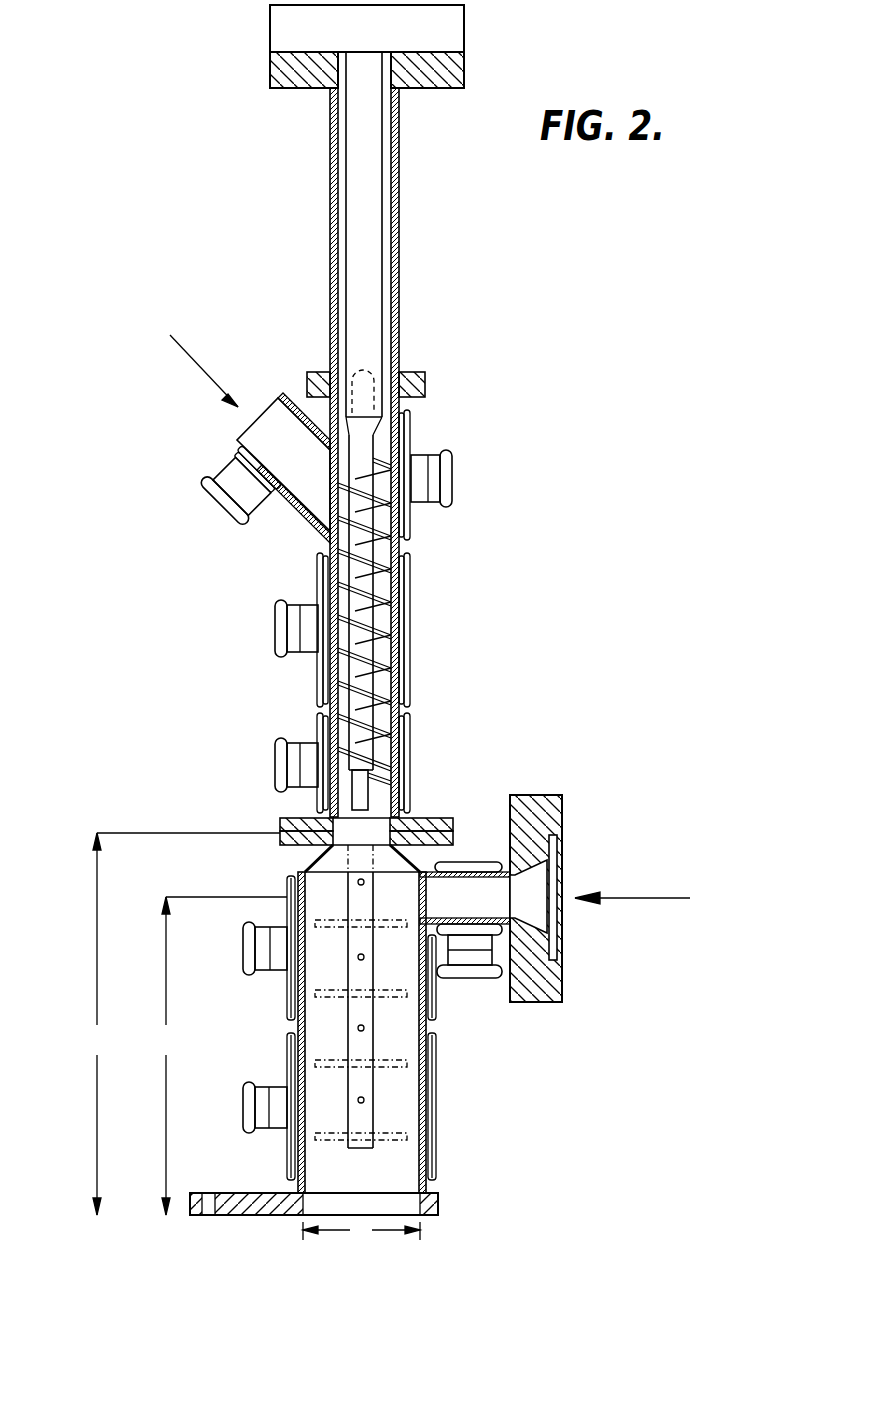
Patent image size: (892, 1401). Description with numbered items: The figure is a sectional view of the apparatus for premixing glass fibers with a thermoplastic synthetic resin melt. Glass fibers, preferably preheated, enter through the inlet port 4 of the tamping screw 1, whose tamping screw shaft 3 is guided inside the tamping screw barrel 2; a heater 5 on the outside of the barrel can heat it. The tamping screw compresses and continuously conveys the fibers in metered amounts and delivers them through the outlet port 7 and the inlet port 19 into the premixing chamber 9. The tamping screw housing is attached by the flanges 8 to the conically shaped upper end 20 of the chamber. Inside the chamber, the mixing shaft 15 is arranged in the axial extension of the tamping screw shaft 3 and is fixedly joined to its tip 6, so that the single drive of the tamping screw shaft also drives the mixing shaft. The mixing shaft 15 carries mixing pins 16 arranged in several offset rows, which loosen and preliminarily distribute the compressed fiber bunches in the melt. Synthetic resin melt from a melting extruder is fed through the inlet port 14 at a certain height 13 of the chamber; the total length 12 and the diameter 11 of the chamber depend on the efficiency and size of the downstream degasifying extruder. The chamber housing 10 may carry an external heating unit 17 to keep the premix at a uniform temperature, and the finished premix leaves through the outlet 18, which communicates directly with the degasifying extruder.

The tamping screw 1 is at (467, 400).
The tamping screw barrel 2 is at (391, 573).
The tamping screw shaft 3 is at (370, 617).
The inlet port 4 is at (241, 440).
The heater 5 is at (403, 666).
The tip of the tamping screw shaft 6 is at (370, 788).
The outlet port 7 is at (382, 823).
The flanges 8 is at (433, 817).
The premixing chamber 9 is at (298, 1033).
The housing 10 is at (432, 1033).
The diameter of the premixing chamber 11 is at (361, 1232).
The total length of the premixing chamber 12 is at (184, 1024).
The height of the feed means 13 is at (222, 1056).
The inlet port for synthetic resin melt 14 is at (540, 875).
The mixing shaft 15 is at (373, 1076).
The mixing pins 16 is at (402, 1140).
The heating unit 17 is at (434, 1118).
The outlet 18 is at (438, 1208).
The inlet port of the premixing chamber 19 is at (307, 852).
The conically shaped upper end 20 is at (418, 862).